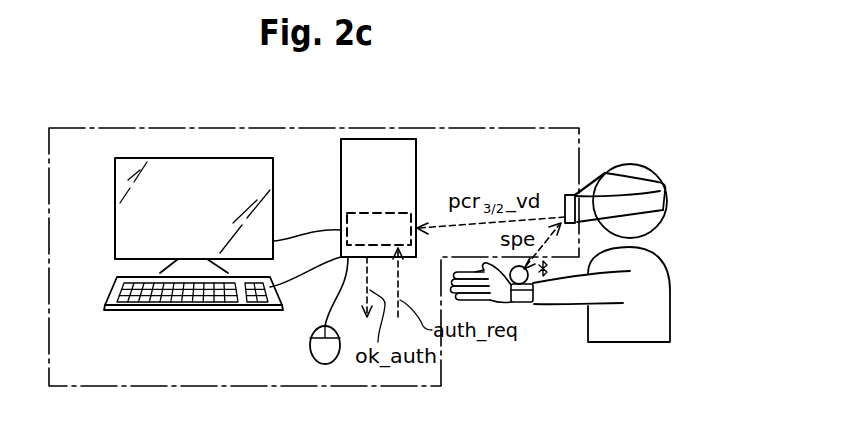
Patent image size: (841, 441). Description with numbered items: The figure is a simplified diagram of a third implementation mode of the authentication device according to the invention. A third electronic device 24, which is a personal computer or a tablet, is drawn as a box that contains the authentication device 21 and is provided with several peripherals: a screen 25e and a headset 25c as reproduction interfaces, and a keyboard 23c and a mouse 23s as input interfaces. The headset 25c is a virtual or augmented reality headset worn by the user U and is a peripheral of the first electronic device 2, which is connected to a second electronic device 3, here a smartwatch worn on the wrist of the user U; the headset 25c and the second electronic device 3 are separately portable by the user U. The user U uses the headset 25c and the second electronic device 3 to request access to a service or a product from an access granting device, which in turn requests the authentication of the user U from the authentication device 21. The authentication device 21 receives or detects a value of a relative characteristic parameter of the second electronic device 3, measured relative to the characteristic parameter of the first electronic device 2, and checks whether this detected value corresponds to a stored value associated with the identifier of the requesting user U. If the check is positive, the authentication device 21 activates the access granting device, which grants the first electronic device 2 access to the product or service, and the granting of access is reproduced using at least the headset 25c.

The first electronic device 2 is at (445, 173).
The third electronic device 24 is at (394, 173).
The authentication device 21 is at (392, 239).
The screen 25e is at (200, 158).
The keyboard 23c is at (112, 292).
The mouse 23s is at (311, 348).
The headset 25c is at (565, 197).
The second electronic device 3 is at (530, 305).
The user U is at (622, 318).